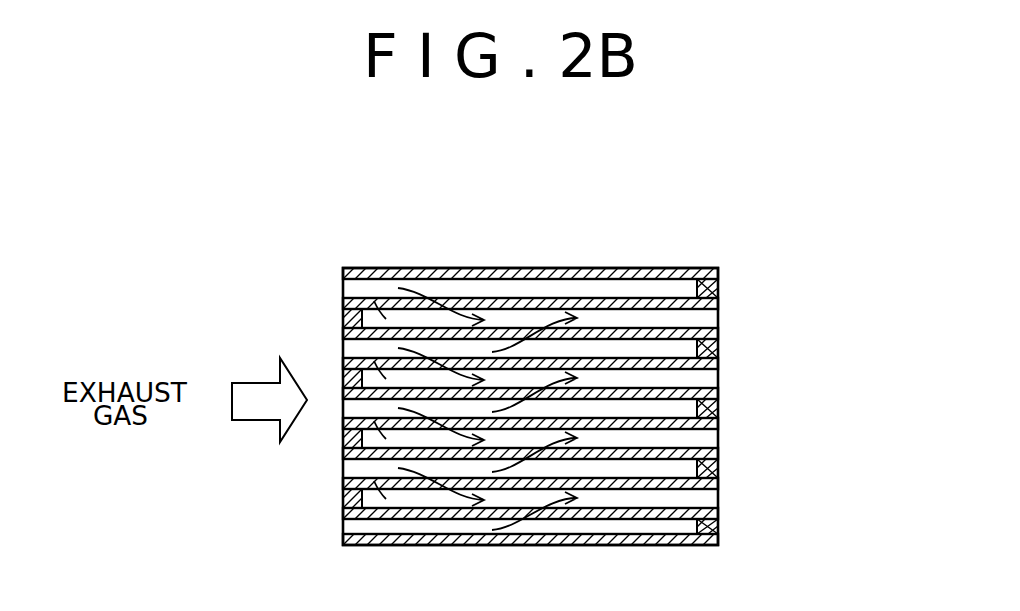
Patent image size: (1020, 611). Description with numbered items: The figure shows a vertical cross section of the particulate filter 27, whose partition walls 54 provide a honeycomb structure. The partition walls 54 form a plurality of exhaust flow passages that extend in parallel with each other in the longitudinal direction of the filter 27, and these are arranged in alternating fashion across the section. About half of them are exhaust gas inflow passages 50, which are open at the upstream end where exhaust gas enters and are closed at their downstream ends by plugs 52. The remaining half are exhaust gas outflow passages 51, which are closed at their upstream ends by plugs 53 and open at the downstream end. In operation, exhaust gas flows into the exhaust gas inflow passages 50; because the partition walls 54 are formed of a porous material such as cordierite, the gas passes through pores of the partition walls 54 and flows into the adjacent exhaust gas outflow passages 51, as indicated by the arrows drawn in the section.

The filter 27 is at (651, 254).
The exhaust gas inflow passage 50 is at (676, 284).
The exhaust gas outflow passage 51 is at (343, 287).
The plug 52 is at (718, 283).
The plug 53 is at (343, 318).
The partition wall 54 is at (594, 336).